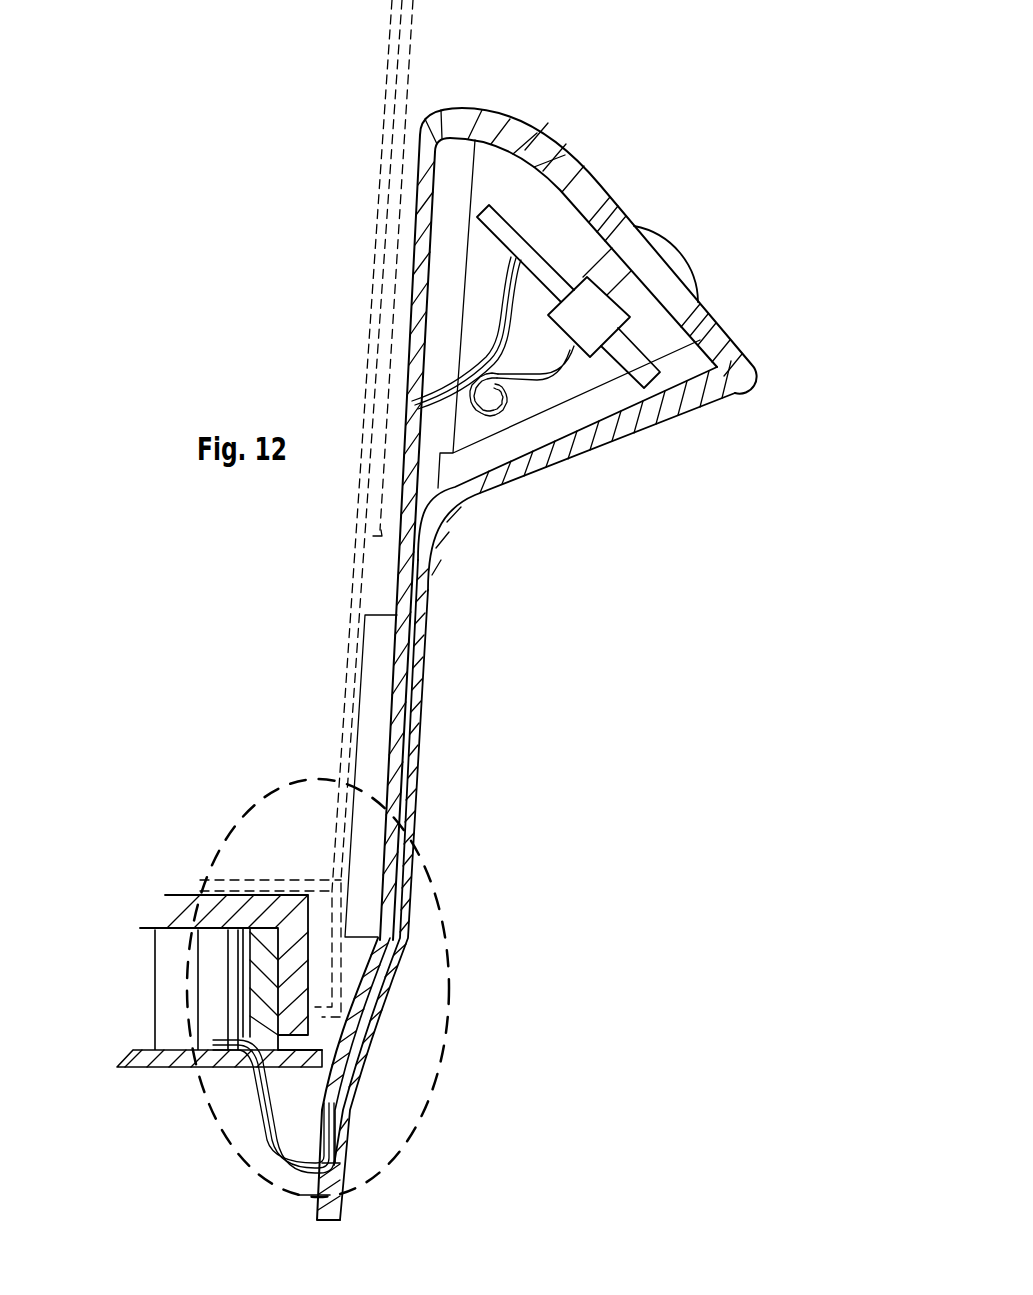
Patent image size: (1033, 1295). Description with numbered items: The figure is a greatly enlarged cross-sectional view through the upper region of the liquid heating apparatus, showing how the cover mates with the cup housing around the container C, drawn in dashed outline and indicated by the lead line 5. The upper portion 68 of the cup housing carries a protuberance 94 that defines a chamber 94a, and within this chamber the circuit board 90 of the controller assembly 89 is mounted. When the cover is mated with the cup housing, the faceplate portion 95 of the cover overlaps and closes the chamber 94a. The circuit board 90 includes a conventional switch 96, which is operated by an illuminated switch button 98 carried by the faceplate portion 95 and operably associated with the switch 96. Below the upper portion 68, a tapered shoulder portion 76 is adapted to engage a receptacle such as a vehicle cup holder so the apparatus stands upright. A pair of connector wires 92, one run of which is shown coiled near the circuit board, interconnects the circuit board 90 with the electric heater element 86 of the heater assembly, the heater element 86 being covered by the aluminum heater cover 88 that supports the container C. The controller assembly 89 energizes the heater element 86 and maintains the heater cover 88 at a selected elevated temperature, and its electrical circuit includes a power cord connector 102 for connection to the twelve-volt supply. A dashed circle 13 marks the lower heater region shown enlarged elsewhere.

The seat 5 is at (410, 68).
The upper portion 68 is at (517, 110).
The controller assembly 89 is at (512, 217).
The circuit board 90 is at (517, 233).
The switch 96 is at (633, 213).
The illuminated switch button 98 is at (688, 262).
The faceplate portion 95 is at (718, 338).
The protuberance 94 is at (603, 453).
The chamber 94a is at (569, 314).
The connector wires 92 is at (497, 294).
The power cord connector 102 is at (528, 372).
The container C is at (353, 663).
The heater cover 88 is at (240, 907).
The electric heater element 86 is at (207, 998).
The tapered shoulder portion 76 is at (400, 943).
The detail view circle FIG. 13 is at (334, 988).